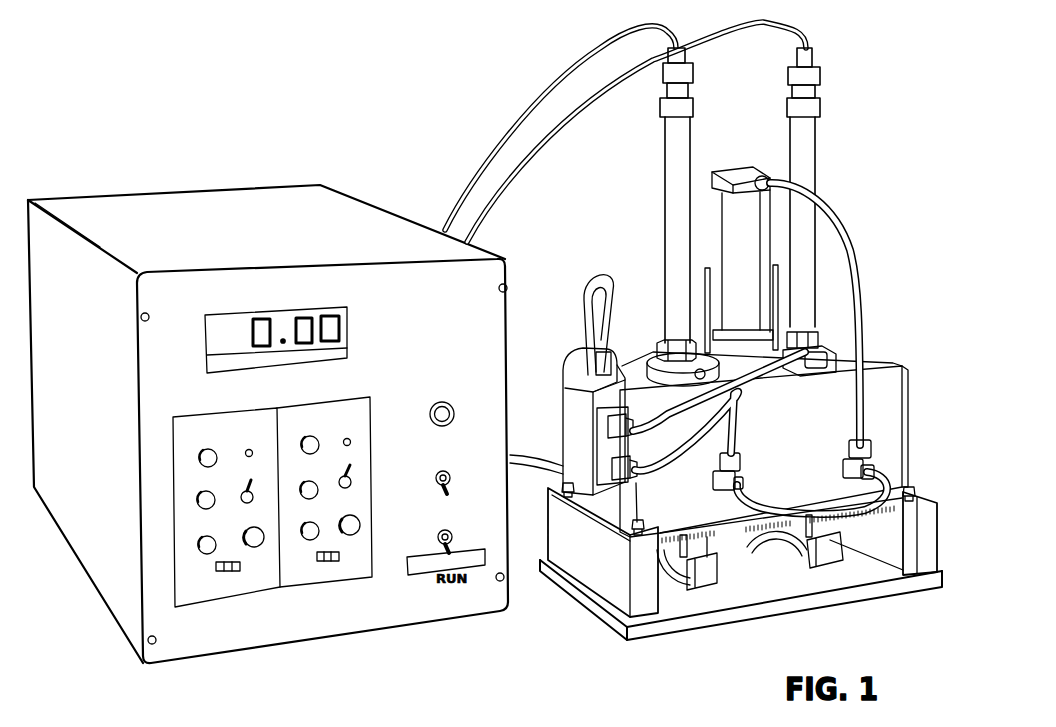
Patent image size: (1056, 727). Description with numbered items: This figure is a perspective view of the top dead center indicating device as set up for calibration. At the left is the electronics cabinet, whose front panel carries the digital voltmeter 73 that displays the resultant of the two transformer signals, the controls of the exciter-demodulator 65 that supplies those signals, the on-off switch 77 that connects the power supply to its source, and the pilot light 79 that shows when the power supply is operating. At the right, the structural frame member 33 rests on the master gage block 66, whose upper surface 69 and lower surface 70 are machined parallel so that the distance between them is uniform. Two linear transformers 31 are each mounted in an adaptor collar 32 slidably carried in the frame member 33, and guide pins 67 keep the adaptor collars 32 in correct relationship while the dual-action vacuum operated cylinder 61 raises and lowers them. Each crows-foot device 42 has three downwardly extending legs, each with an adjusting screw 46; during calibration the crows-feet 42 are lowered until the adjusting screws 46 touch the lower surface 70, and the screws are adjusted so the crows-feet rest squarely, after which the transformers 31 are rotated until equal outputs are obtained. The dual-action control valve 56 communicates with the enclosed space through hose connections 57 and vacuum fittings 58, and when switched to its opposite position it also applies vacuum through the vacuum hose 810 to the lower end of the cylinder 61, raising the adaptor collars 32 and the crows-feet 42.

The linear transformers 31 is at (668, 170).
The adaptor collar 32 is at (655, 353).
The structural frame member 33 is at (907, 413).
The crows-foot device 42 is at (817, 548).
The adjusting screw 46 is at (700, 593).
The dual-action control valve 56 is at (570, 403).
The hose connections 57 is at (738, 432).
The vacuum fittings 58 is at (743, 478).
The dual-action vacuum operated cylinder 61 is at (730, 230).
The exciter-demodulator 65 is at (237, 600).
The master gage block 66 is at (942, 535).
The guide pins 67 is at (705, 290).
The upper surface 69 is at (575, 507).
The lower surface 70 is at (877, 577).
The digital voltmeter 73 is at (349, 347).
The on-off switch 77 is at (436, 480).
The pilot light 79 is at (430, 421).
The vacuum hose 810 is at (673, 472).